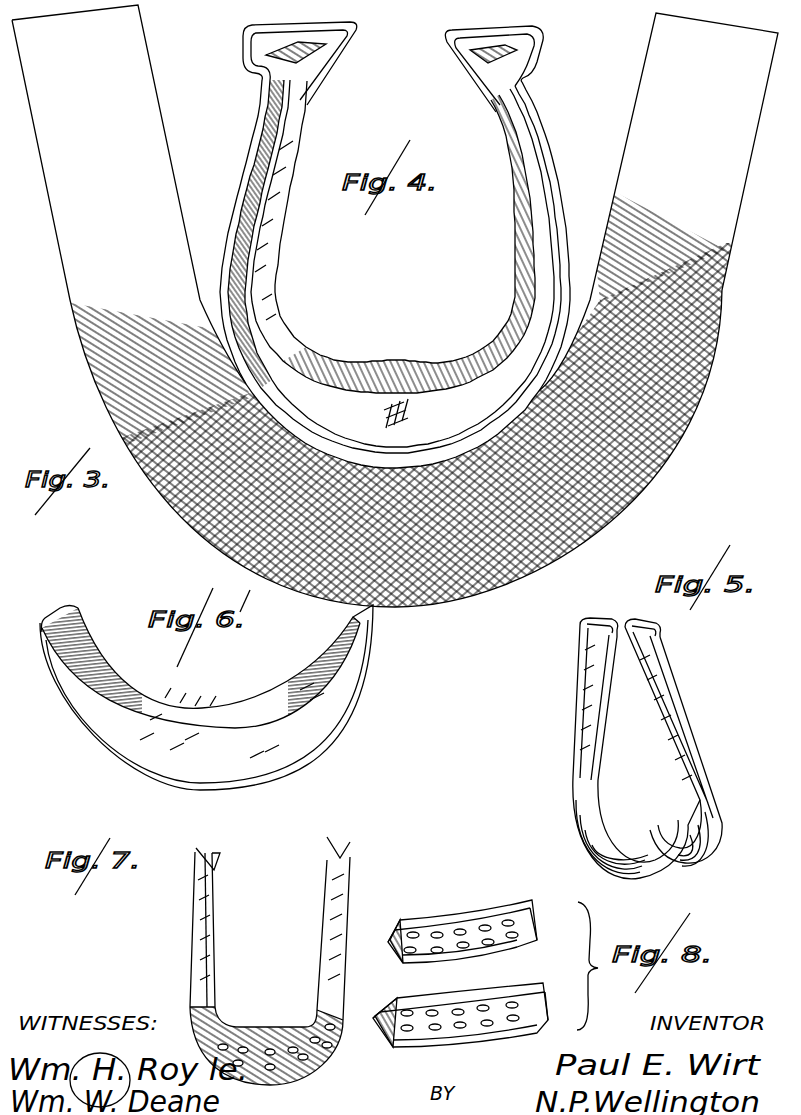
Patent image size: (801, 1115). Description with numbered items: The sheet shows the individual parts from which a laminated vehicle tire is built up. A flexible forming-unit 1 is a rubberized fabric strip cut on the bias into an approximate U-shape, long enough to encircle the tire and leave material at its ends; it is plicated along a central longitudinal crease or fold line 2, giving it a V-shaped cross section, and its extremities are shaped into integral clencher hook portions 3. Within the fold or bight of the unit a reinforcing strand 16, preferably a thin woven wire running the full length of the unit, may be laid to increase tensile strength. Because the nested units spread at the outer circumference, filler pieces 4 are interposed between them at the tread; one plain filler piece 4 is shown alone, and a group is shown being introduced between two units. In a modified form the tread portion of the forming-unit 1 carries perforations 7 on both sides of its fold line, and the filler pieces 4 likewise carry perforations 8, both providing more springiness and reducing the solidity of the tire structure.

In FIG. 3, the flexible forming-unit 1 is at (702, 164).
In FIG. 4, the flexible forming-unit 1 is at (430, 351).
In FIG. 5, the flexible forming-unit 1 is at (582, 700).
In FIG. 7, the flexible forming-unit 1 is at (200, 934).
In FIG. 4, the central longitudinal crease or fold line 2 is at (282, 293).
In FIG. 7, the central longitudinal crease or fold line 2 is at (222, 938).
In FIG. 4, the clencher hook portion 3 is at (320, 54).
In FIG. 6, the filler piece 4 is at (320, 723).
In FIG. 5, the filler piece 4 is at (605, 866).
In FIG. 8, the filler piece 4 is at (520, 944).
In FIG. 7, the perforations 7 is at (293, 1048).
In FIG. 8, the perforations 8 is at (460, 930).
In FIG. 4, the reinforcing strand 16 is at (400, 397).